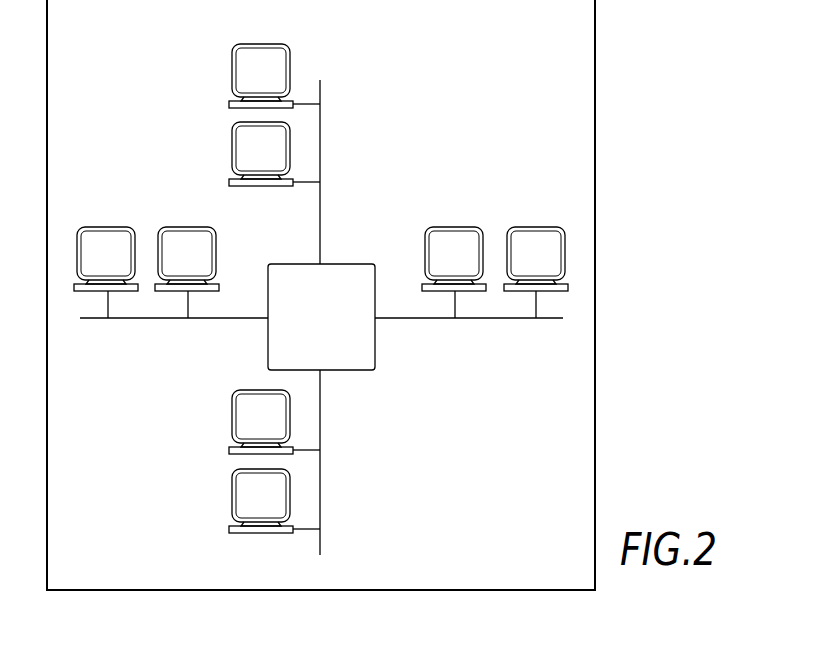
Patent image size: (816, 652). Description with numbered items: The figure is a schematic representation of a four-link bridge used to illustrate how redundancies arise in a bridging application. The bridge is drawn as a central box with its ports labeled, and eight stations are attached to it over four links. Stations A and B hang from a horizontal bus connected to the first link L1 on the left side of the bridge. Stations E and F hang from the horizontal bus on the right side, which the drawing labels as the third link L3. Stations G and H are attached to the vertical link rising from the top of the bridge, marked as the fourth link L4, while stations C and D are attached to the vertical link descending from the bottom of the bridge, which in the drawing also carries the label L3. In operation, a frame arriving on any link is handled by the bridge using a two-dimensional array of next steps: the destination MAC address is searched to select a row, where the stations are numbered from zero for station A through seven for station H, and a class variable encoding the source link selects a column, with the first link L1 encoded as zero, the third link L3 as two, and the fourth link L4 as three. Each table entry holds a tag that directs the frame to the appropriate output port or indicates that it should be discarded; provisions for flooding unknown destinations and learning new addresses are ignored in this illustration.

The station A is at (106, 272).
The station B is at (187, 272).
The station C is at (274, 422).
The station D is at (274, 501).
The station E is at (454, 272).
The station F is at (536, 272).
The station G is at (274, 76).
The station H is at (274, 154).
The link 1 L1 is at (290, 319).
The link 3 L3 is at (337, 337).
The link 4 L4 is at (320, 284).